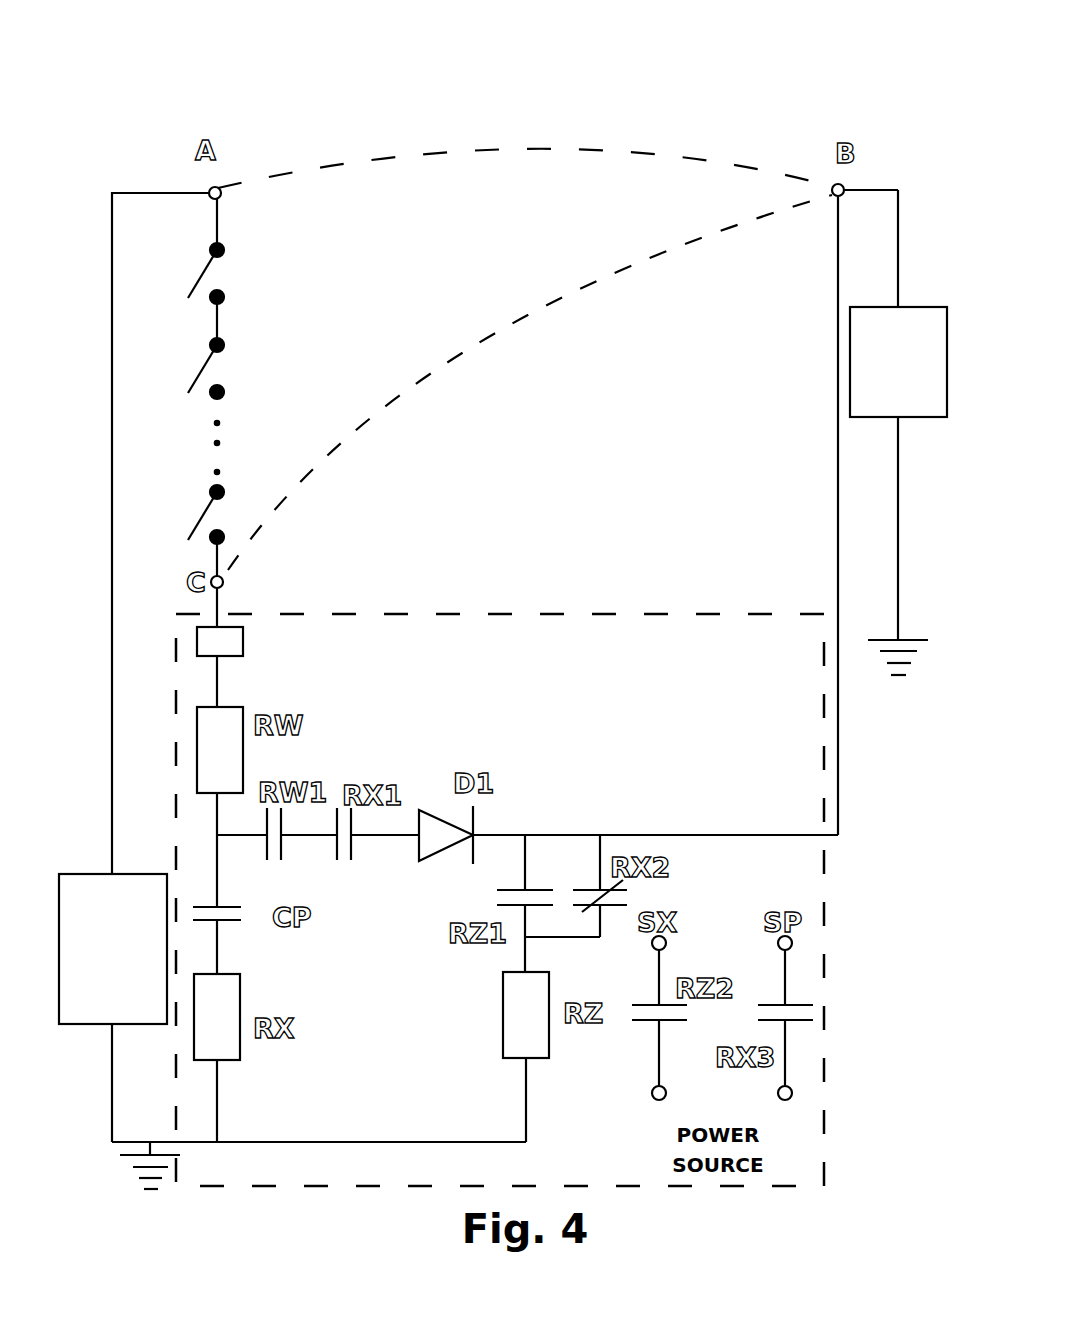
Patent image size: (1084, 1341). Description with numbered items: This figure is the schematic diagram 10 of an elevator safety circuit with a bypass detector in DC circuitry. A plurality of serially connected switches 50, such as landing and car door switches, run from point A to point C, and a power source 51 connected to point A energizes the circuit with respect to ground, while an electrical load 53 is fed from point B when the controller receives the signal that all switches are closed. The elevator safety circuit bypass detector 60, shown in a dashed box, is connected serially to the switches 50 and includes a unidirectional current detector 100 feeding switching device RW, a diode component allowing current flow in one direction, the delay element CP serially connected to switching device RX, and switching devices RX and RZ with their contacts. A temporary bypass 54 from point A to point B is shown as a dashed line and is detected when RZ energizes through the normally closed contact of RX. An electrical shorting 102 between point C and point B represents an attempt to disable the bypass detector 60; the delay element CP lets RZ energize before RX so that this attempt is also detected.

The schematic diagram 10 is at (300, 55).
The switches 50 is at (200, 268).
The power source 51 is at (108, 874).
The electrical load 53 is at (893, 307).
The dashed line 54 is at (537, 152).
The elevator safety circuit bypass detector 60 is at (505, 612).
The unidirectional current detector 100 is at (243, 636).
The electrical shorting 102 is at (462, 350).